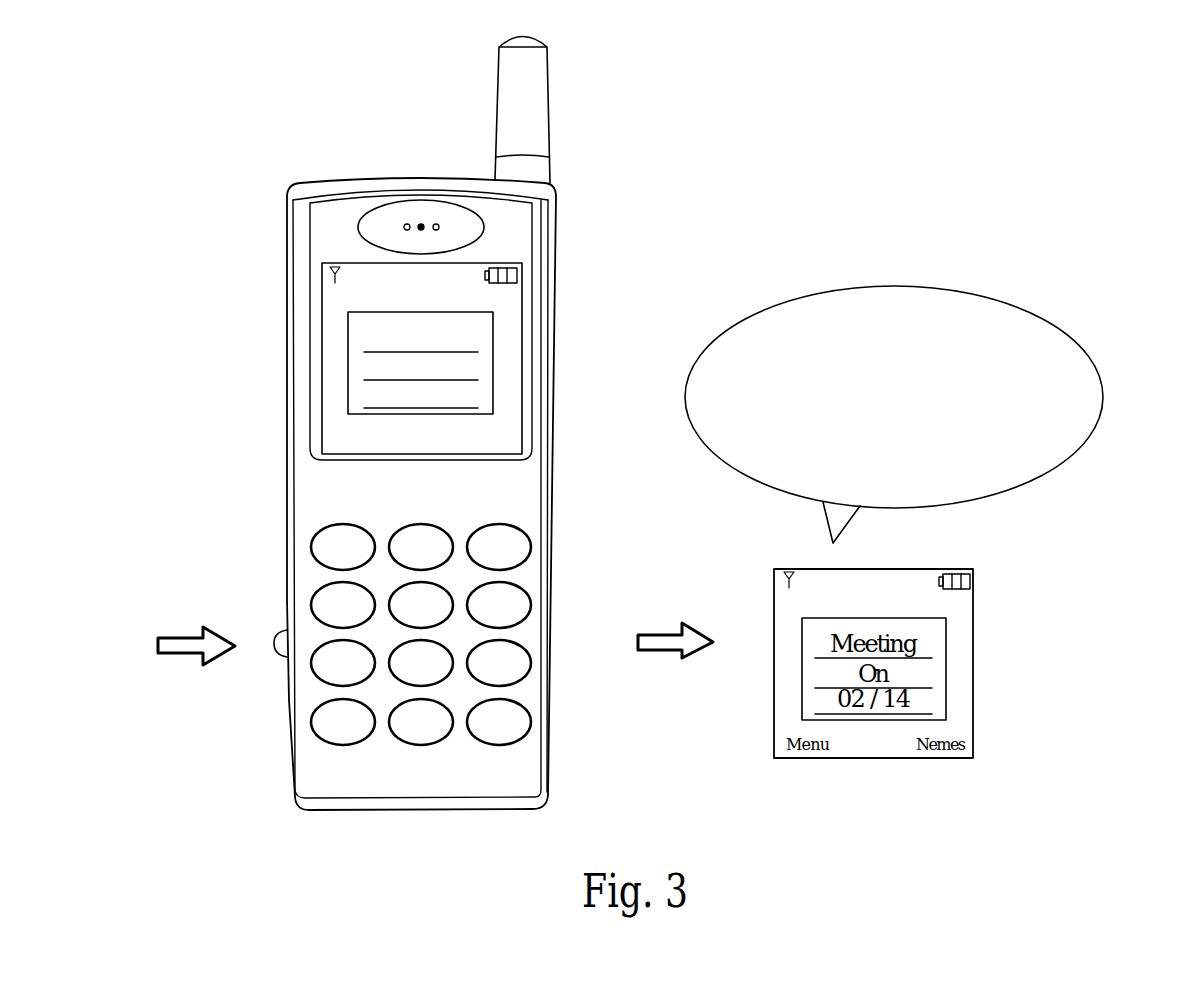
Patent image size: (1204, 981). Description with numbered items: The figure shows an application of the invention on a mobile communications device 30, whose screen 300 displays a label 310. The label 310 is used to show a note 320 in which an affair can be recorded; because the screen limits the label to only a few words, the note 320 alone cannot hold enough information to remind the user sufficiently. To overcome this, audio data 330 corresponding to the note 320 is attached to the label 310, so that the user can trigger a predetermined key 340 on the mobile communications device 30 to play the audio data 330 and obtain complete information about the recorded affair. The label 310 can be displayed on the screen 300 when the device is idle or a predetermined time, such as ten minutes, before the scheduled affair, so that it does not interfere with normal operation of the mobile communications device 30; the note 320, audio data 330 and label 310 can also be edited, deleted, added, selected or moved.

The mobile communications device 30 is at (666, 132).
The screen 300 is at (522, 358).
The label 310 is at (348, 414).
The note 320 is at (348, 330).
The audio data 330 is at (1103, 394).
The predetermined key 340 is at (278, 645).